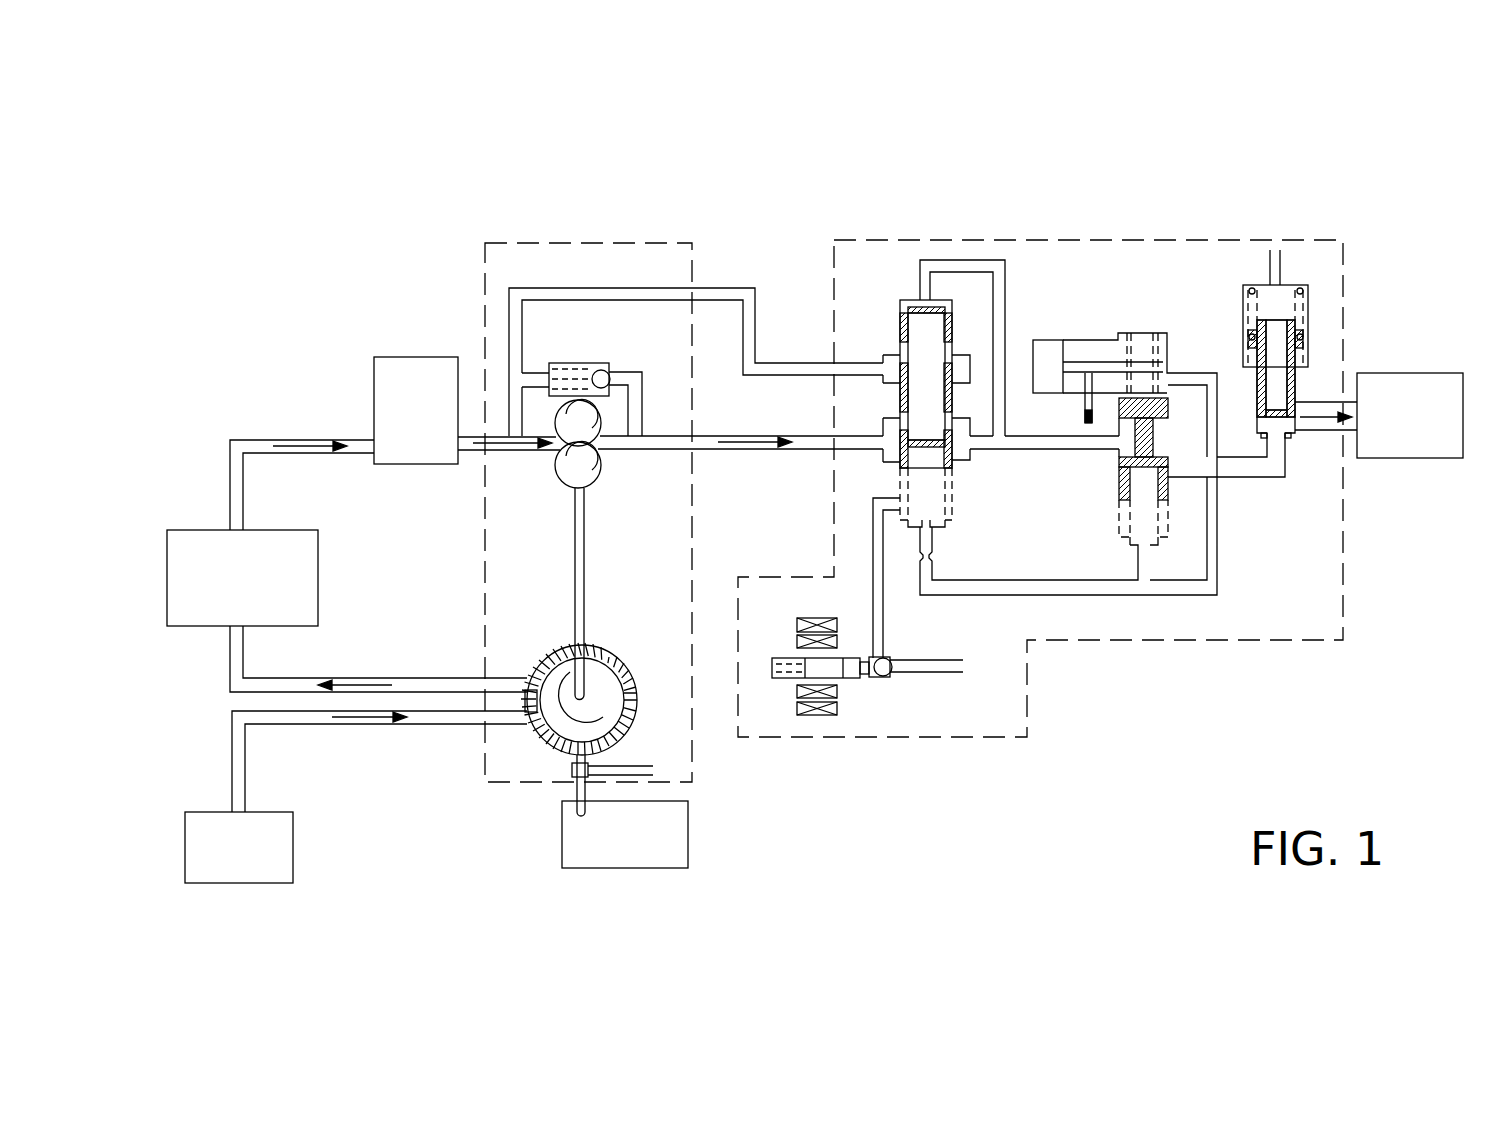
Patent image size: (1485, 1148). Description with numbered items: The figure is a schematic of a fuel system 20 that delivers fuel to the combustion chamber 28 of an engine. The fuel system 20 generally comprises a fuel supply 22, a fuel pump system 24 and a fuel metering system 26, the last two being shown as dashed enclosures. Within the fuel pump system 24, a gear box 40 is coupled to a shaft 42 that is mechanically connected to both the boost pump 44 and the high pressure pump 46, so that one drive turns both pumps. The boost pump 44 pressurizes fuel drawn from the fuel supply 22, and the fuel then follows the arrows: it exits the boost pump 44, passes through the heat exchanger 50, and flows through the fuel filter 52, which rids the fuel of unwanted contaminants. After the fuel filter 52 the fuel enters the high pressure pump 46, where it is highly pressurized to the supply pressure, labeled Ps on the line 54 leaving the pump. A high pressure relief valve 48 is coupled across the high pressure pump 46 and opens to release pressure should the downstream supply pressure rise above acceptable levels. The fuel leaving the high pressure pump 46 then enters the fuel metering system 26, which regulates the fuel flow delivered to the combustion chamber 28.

The fuel system 20 is at (932, 856).
The fuel supply 22 is at (293, 845).
The fuel pump system 24 is at (594, 210).
The fuel metering system 26 is at (1182, 200).
The combustion chamber 28 is at (1378, 373).
The gear box 40 is at (627, 868).
The shaft 42 is at (585, 588).
The boost pump 44 is at (600, 674).
The high pressure pump 46 is at (598, 478).
The high pressure relief valve 48 is at (582, 363).
The heat exchanger 50 is at (318, 575).
The fuel filter 52 is at (374, 360).
The supply pressure line 54 is at (720, 452).